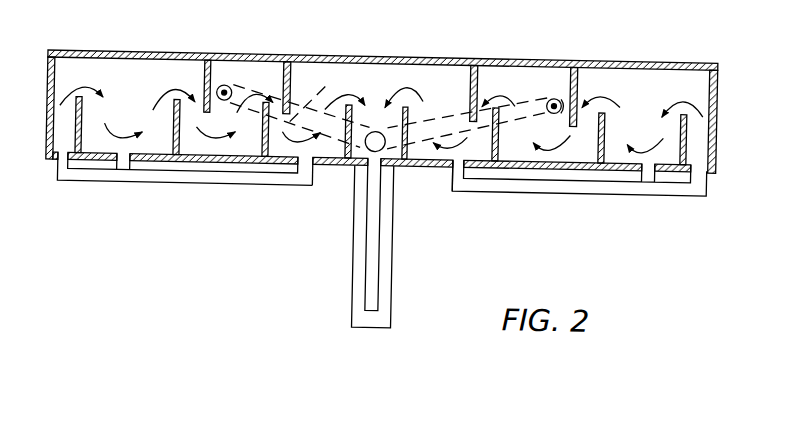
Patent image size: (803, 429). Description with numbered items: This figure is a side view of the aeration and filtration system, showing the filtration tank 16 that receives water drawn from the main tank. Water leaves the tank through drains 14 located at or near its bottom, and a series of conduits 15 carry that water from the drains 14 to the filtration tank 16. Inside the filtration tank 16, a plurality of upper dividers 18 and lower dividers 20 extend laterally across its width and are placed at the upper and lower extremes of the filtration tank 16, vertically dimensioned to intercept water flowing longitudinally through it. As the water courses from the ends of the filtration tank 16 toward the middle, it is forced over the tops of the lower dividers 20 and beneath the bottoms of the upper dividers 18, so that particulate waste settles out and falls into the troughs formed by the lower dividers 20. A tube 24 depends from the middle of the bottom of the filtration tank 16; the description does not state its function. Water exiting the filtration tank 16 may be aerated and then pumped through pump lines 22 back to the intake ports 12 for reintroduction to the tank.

The intake port 12 is at (549, 90).
The drain 14 is at (315, 164).
The conduit 15 is at (191, 180).
The filtration tank 16 is at (50, 60).
The upper divider 18 is at (205, 66).
The lower divider 20 is at (174, 122).
The pump line 22 is at (388, 108).
The drain tube 24 is at (397, 279).